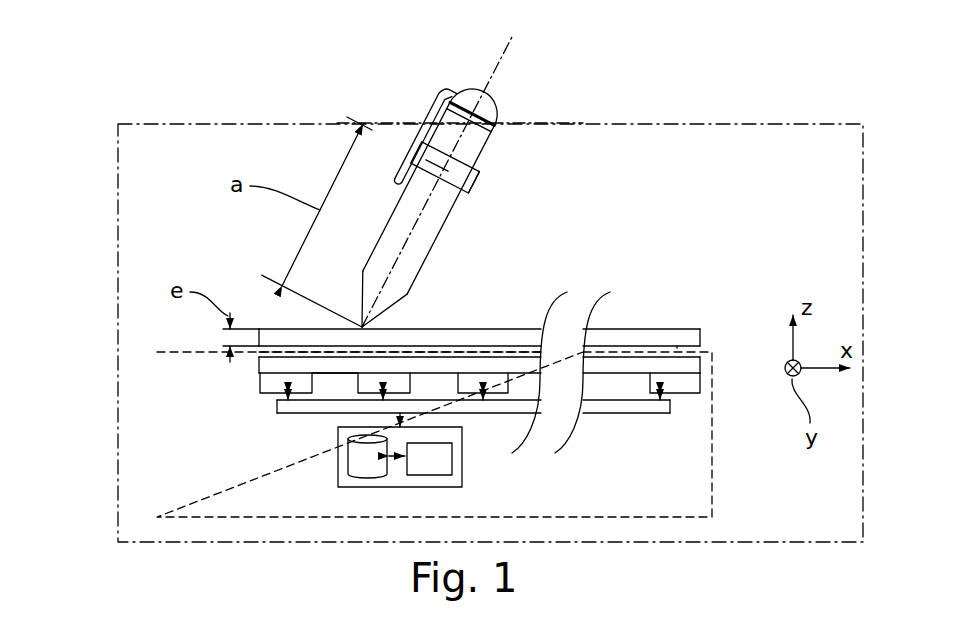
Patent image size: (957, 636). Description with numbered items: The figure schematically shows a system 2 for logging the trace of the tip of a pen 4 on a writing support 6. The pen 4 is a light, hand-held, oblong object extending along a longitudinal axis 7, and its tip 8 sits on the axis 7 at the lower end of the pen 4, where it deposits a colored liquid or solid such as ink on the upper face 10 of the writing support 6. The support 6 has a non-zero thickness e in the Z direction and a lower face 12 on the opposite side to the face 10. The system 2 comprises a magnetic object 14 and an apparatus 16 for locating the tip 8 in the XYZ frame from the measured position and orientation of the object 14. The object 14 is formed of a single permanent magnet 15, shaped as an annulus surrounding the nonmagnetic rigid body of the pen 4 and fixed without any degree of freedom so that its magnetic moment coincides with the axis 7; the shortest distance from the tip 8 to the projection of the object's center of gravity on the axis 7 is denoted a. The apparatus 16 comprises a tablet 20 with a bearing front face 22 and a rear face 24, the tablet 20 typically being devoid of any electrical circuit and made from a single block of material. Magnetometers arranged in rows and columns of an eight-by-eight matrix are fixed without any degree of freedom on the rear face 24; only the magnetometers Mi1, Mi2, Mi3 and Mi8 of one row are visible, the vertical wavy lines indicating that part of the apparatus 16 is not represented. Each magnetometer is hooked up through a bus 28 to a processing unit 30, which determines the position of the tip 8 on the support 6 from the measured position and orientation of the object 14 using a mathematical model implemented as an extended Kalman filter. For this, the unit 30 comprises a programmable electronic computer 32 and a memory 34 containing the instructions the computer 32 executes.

The system 2 is at (116, 262).
The pen 4 is at (460, 181).
The longitudinal axis 7 is at (464, 132).
The tip 8 is at (366, 326).
The magnetic object 14 is at (482, 181).
The permanent magnet 15 is at (473, 194).
The writing support 6 is at (515, 297).
The upper face 10 is at (650, 328).
The lower face 12 is at (677, 347).
The apparatus 16 is at (203, 344).
The tablet 20 is at (258, 353).
The bearing front face 22 is at (256, 367).
The rear face 24 is at (343, 366).
The magnetometer Mi1 is at (272, 388).
The magnetometer Mi2 is at (368, 385).
The magnetometer Mi3 is at (460, 382).
The magnetometer Mi8 is at (688, 384).
The bus 28 is at (298, 408).
The processing unit 30 is at (409, 470).
The programmable electronic computer 32 is at (434, 465).
The memory 34 is at (363, 445).